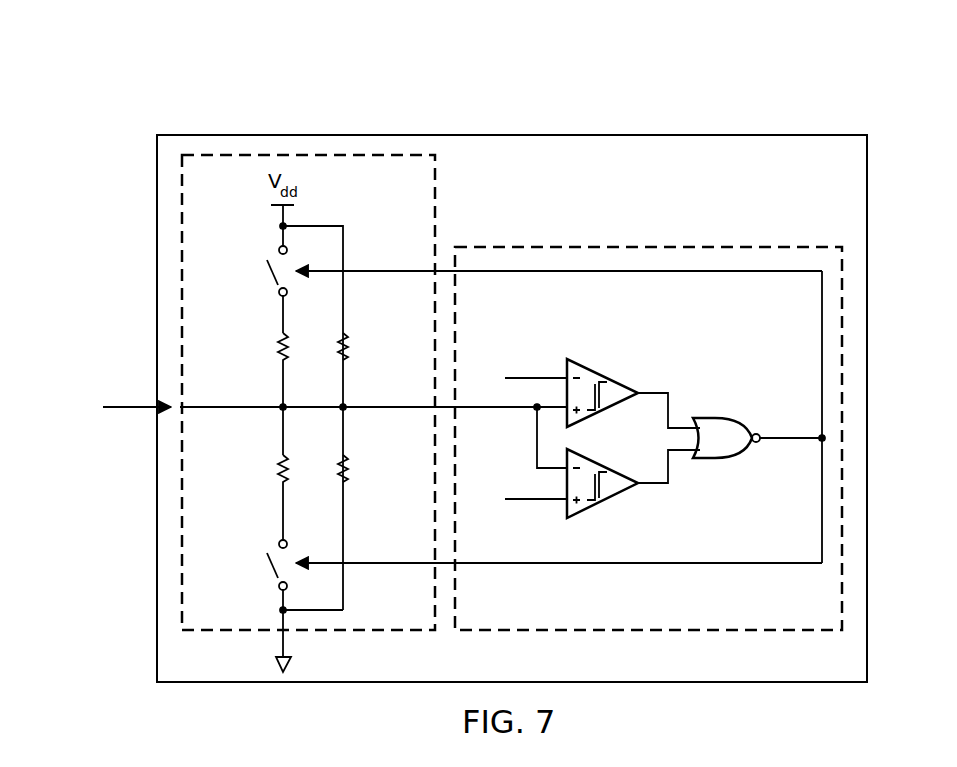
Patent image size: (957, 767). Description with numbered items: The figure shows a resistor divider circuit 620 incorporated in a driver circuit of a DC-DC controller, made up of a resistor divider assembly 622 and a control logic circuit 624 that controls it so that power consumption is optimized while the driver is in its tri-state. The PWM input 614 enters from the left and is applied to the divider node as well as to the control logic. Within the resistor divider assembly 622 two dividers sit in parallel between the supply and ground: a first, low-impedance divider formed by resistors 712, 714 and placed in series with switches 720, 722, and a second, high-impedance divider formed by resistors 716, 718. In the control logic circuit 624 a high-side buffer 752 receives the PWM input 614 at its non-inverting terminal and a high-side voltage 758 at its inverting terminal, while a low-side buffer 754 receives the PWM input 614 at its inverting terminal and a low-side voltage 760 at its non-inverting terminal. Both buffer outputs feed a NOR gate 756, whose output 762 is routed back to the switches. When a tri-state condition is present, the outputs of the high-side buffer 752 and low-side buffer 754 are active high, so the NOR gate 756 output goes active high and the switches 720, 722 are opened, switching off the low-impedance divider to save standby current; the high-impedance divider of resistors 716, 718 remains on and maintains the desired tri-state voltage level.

The resistor divider circuit 620 is at (673, 133).
The resistor divider assembly 622 is at (438, 210).
The control logic circuit 624 is at (710, 245).
The PWM input 614 is at (137, 405).
The switch 720 is at (264, 271).
The resistor 712 is at (278, 347).
The resistor 716 is at (350, 347).
The resistor 714 is at (278, 490).
The resistor 718 is at (350, 490).
The switch 722 is at (264, 564).
The high-side buffer 752 is at (603, 373).
The low-side buffer 754 is at (605, 502).
The NOR gate 756 is at (720, 459).
The high-side voltage 758 is at (538, 377).
The low-side voltage 760 is at (537, 500).
The comparator output 762 is at (779, 440).